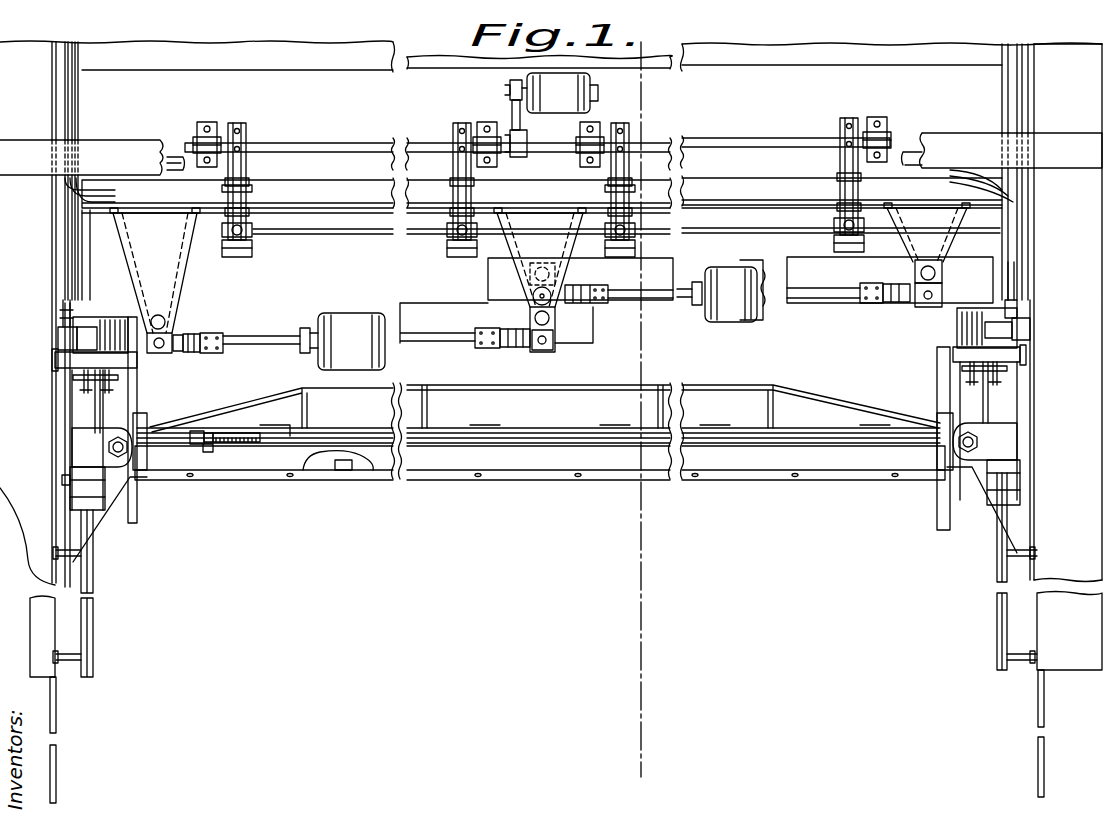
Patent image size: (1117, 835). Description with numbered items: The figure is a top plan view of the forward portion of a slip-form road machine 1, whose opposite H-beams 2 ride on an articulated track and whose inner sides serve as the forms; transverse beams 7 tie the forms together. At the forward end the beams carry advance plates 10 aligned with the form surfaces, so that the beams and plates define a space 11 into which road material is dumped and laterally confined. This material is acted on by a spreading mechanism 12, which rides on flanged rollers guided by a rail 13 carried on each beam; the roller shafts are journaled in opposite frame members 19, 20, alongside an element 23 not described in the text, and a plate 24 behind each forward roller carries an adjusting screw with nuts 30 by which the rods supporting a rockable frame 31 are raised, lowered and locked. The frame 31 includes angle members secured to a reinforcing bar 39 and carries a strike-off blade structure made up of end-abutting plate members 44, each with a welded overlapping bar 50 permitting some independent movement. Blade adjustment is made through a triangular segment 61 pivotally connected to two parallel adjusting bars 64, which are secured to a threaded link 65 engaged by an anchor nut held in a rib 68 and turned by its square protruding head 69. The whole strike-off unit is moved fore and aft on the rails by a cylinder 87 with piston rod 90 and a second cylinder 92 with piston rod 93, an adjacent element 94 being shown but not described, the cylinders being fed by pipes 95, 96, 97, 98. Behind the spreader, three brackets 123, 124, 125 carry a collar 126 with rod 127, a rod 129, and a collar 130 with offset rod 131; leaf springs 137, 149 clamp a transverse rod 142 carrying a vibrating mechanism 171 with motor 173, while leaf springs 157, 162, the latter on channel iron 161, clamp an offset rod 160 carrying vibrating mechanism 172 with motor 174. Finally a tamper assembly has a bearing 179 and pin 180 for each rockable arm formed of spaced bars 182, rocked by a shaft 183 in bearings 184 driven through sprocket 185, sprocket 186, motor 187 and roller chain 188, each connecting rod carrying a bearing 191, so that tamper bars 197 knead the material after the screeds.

The road machine 1 is at (1100, 62).
The H-beams 2 is at (624, 80).
The transverse beams 7 is at (138, 147).
The advance plates 10 is at (56, 717).
The space 11 is at (572, 690).
The spreading mechanism 12 is at (553, 488).
The rail 13 is at (96, 578).
The frame member 19 is at (65, 412).
The frame member 20 is at (103, 412).
The lower cylinder 23 is at (70, 477).
The plate 24 is at (87, 433).
The nuts 30 is at (108, 448).
The frame 31 is at (600, 380).
The reinforcing bar 39 is at (700, 383).
The plate members 44 is at (325, 472).
The overlapping bar 50 is at (347, 471).
The triangular segment 61 is at (458, 433).
The adjusting bars 64 is at (278, 428).
The threaded link 65 is at (225, 433).
The rib 68 is at (205, 452).
The protruding head 69 is at (197, 431).
The cylinder 87 is at (80, 104).
The piston rod 90 is at (58, 330).
The cylinder 92 is at (1028, 230).
The piston rod 93 is at (1028, 315).
The block 94 is at (1030, 330).
The pipe 95 is at (68, 125).
The pipe 96 is at (66, 245).
The pipe 97 is at (1013, 93).
The pipe 98 is at (1017, 220).
The bracket 123 is at (163, 265).
The bracket 124 is at (557, 242).
The bracket 125 is at (910, 248).
The collar 126 is at (172, 330).
The rod 127 is at (172, 322).
The rod 129 is at (550, 318).
The collar 130 is at (942, 273).
The rod 131 is at (920, 273).
The leaf spring 137 is at (190, 352).
The transverse rod 142 is at (438, 342).
The leaf spring 149 is at (512, 328).
The leaf spring 157 is at (567, 292).
The rod 160 is at (890, 280).
The channel iron 161 is at (940, 307).
The leaf spring 162 is at (895, 303).
The vibrating mechanism 171 is at (383, 310).
The vibrating mechanism 172 is at (767, 263).
The motor 173 is at (337, 323).
The motor 174 is at (757, 308).
The bearing 179 is at (460, 192).
The pin 180 is at (253, 190).
The spaced bars 182 is at (452, 165).
The shaft 183 is at (322, 143).
The bearings 184 is at (483, 137).
The sprocket 185 is at (527, 130).
The sprocket 186 is at (513, 82).
The motor 187 is at (573, 83).
The roller chain 188 is at (513, 117).
The bearing 191 is at (238, 132).
The tamper bar 197 is at (355, 233).